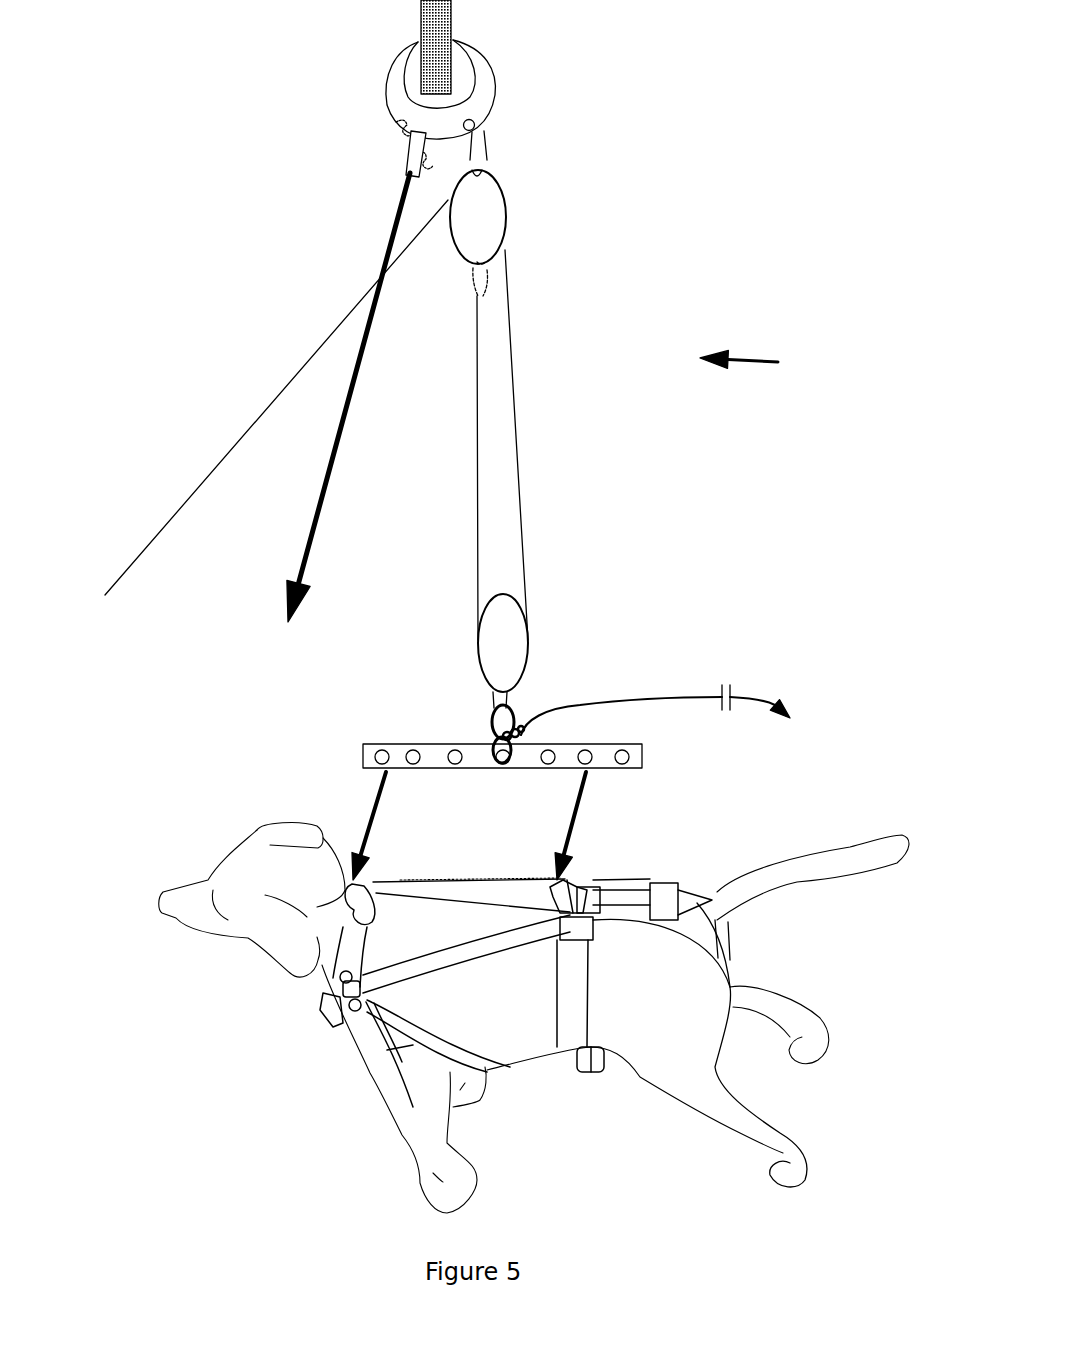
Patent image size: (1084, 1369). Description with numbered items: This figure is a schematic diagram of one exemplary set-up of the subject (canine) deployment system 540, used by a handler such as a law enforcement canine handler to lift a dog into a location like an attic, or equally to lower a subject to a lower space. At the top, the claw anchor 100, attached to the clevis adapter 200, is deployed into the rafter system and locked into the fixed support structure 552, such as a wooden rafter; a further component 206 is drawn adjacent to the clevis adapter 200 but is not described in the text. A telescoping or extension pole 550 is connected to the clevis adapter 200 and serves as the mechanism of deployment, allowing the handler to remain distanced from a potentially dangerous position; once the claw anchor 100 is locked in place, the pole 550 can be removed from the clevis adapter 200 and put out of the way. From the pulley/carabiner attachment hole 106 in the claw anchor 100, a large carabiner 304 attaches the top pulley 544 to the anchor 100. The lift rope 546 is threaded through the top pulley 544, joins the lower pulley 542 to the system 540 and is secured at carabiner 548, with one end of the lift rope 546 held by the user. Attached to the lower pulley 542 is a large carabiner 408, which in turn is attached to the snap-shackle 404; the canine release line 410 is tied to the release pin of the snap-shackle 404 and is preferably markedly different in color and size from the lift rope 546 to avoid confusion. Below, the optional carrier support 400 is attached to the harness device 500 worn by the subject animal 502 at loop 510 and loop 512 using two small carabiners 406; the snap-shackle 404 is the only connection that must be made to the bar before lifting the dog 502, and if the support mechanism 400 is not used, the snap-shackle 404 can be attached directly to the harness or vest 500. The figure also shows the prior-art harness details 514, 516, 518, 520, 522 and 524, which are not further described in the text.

The claw anchor 100 is at (430, 165).
The pulley/carabiner attachment hole 106 is at (483, 120).
The clevis adapter 200 is at (400, 165).
The spring 206 is at (390, 125).
The large carabiner 304 is at (485, 143).
The carrier support 400 is at (498, 731).
The snap-shackle 404 is at (522, 726).
The small carabiners 406 is at (380, 772).
The large carabiner 408 is at (497, 707).
The release line 410 is at (755, 697).
The harness device 500 is at (534, 997).
The subject animal 502 is at (617, 977).
The loop 510 is at (357, 877).
The loop 512 is at (570, 878).
The chest strap 514 is at (548, 815).
The attachment arrows 516 is at (469, 826).
The chest ring 518 is at (340, 980).
The tag 520 is at (337, 1013).
The lower strap 522 is at (377, 1047).
The lower chest strap 524 is at (413, 1035).
The subject deployment system 540 is at (765, 360).
The lower pulley 542 is at (512, 657).
The top pulley 544 is at (488, 223).
The lift rope 546 is at (200, 485).
The carabiner 548 is at (470, 272).
The telescoping or extension pole 550 is at (310, 520).
The fixed support structure 552 is at (420, 20).